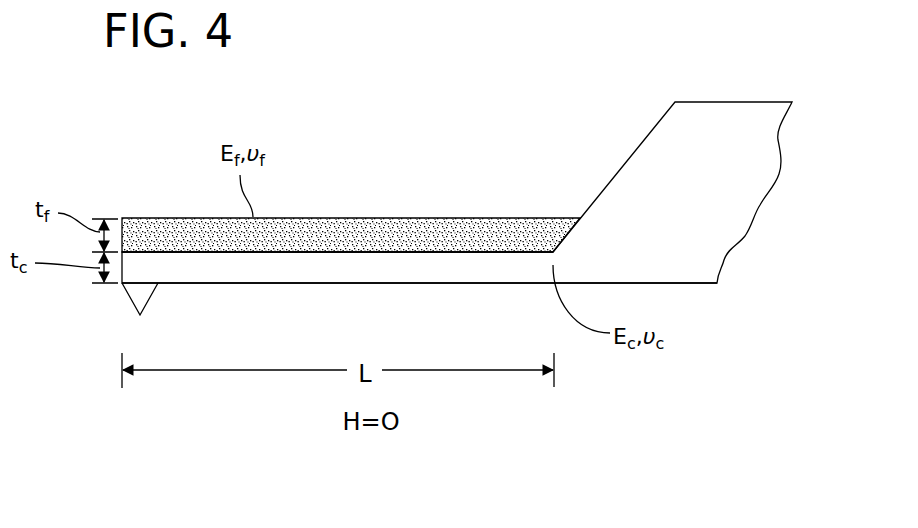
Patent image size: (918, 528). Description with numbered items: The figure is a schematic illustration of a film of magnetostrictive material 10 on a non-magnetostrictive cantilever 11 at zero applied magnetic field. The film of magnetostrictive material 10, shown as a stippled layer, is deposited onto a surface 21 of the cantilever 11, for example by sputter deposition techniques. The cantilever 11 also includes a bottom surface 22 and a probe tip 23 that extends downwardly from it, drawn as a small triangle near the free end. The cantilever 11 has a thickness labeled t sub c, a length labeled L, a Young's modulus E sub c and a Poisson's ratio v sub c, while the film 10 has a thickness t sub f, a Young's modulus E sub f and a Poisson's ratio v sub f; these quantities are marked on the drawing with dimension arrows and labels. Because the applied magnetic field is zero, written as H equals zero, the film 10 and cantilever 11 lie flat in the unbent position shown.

The film of magnetostrictive material 10 is at (472, 232).
The cantilever 11 is at (396, 269).
The surface 21 is at (185, 251).
The bottom surface 22 is at (276, 284).
The probe tip 23 is at (131, 297).